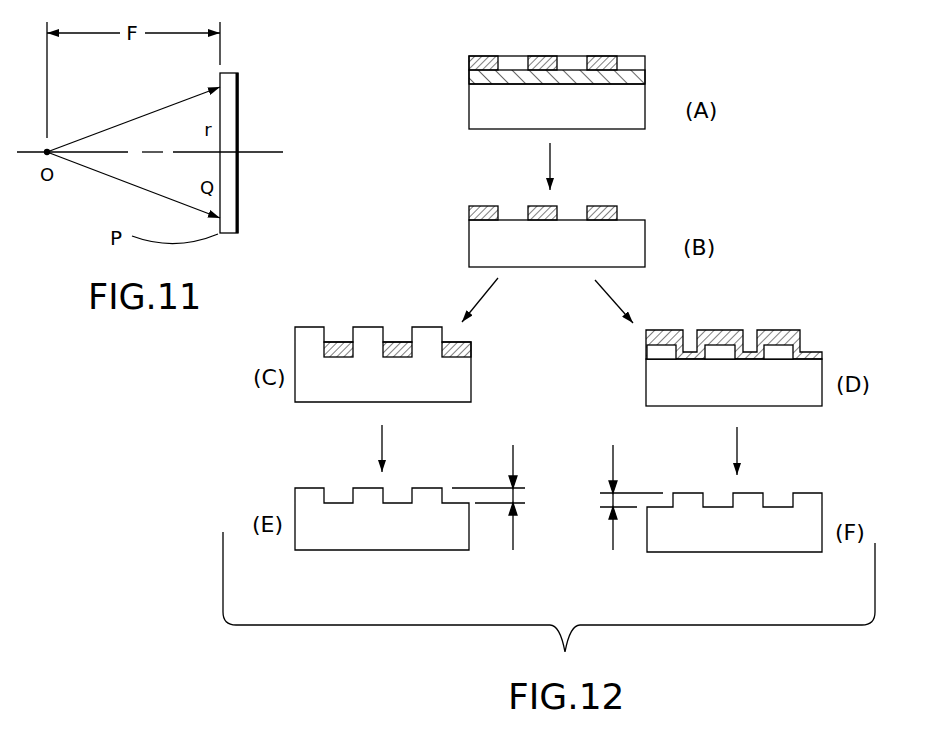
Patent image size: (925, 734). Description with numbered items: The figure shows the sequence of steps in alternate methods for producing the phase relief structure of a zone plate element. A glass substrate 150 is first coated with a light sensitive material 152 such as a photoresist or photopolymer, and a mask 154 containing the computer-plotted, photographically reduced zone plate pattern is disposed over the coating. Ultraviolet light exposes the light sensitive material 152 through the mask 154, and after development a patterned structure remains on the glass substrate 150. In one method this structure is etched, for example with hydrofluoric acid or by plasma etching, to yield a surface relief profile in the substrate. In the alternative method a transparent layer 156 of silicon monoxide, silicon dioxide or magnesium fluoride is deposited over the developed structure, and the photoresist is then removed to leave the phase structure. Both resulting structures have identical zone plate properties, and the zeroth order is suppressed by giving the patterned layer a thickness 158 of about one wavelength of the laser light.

The glass substrate 150 is at (536, 118).
The light sensitive material 152 is at (645, 80).
The mask 154 is at (482, 56).
The layer 156 is at (772, 330).
The thickness 158 is at (523, 498).